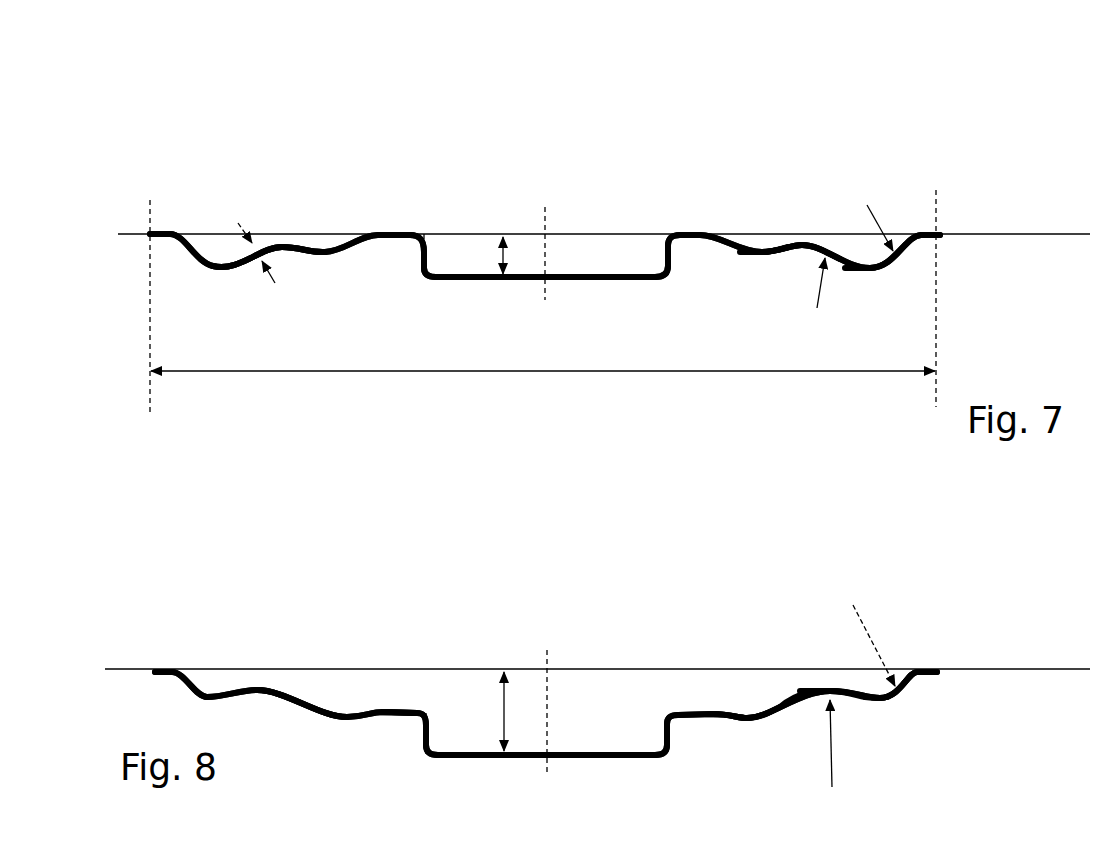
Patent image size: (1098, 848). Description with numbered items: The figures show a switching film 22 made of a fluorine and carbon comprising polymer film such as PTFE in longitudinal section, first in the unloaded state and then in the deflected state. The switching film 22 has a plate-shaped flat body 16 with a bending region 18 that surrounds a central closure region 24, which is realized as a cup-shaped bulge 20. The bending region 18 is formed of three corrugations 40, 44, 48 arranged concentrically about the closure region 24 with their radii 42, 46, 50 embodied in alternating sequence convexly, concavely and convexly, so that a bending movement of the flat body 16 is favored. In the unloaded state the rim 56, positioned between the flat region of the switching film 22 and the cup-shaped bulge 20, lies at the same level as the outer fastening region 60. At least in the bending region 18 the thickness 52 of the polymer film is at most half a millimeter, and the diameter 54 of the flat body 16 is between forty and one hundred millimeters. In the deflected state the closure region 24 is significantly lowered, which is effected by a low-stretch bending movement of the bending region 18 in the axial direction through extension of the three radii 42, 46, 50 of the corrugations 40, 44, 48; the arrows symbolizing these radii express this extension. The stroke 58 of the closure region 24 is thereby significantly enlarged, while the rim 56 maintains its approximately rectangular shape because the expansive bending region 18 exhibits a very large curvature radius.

In FIG. 7, the flat body 16 is at (354, 215).
In FIG. 8, the flat body 16 is at (362, 652).
In FIG. 7, the bending region 18 is at (295, 242).
In FIG. 8, the bending region 18 is at (287, 697).
In FIG. 7, the cup-shaped bulge 20 is at (418, 266).
In FIG. 8, the cup-shaped bulge 20 is at (422, 742).
In FIG. 7, the switching film 22 is at (398, 116).
In FIG. 8, the switching film 22 is at (414, 547).
In FIG. 7, the closure region 24 is at (630, 276).
In FIG. 8, the closure region 24 is at (630, 754).
In FIG. 7, the corrugation 40 is at (886, 265).
In FIG. 8, the corrugation 40 is at (885, 698).
In FIG. 7, the radius 42 is at (885, 237).
In FIG. 8, the radius 42 is at (885, 668).
In FIG. 7, the corrugation 44 is at (818, 232).
In FIG. 8, the corrugation 44 is at (818, 683).
In FIG. 7, the radius 46 is at (820, 287).
In FIG. 8, the radius 46 is at (833, 753).
In FIG. 7, the corrugation 48 is at (752, 255).
In FIG. 8, the corrugation 48 is at (737, 720).
In FIG. 7, the radius 50 is at (756, 245).
In FIG. 8, the radius 50 is at (752, 710).
In FIG. 7, the thickness 52 is at (274, 283).
In FIG. 7, the diameter 54 is at (657, 370).
In FIG. 7, the rim 56 is at (428, 231).
In FIG. 8, the rim 56 is at (427, 708).
In FIG. 7, the stroke 58 is at (497, 262).
In FIG. 8, the stroke 58 is at (500, 730).
In FIG. 7, the outer fastening region 60 is at (165, 233).
In FIG. 8, the outer fastening region 60 is at (170, 671).